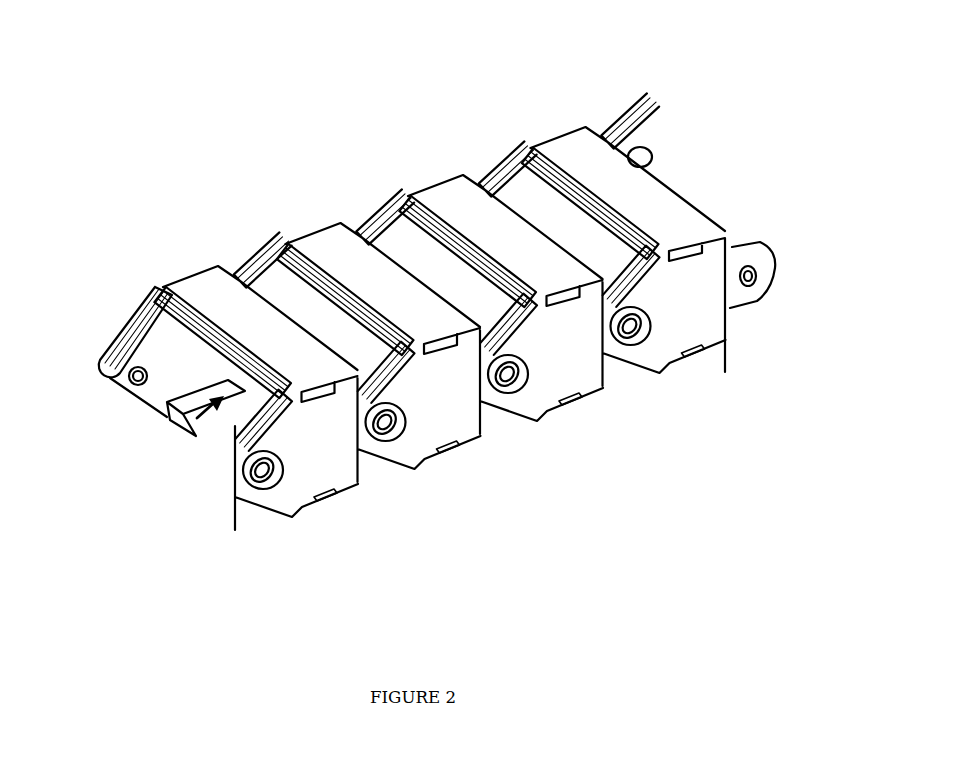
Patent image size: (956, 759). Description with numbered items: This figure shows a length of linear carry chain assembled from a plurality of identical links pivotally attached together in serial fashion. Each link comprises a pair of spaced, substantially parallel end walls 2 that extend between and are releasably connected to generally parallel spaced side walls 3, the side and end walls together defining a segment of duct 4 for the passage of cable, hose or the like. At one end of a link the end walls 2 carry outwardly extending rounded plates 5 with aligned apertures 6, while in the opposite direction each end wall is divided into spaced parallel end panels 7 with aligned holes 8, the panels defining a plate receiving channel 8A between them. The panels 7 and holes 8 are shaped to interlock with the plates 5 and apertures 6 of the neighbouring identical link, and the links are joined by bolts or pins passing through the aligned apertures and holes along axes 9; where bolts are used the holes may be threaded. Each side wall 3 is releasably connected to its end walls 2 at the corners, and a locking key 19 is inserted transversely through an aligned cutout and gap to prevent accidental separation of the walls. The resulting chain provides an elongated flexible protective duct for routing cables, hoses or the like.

The end wall 2 is at (683, 325).
The side wall 3 is at (222, 303).
The segment of duct 4 is at (200, 407).
The rounded plate 5 is at (644, 150).
The aperture 6 is at (749, 280).
The end panel 7 is at (670, 230).
The hole 8 is at (630, 330).
The plate receiving channel 8A is at (110, 367).
The axis 9 is at (677, 363).
The locking key 19 is at (335, 398).